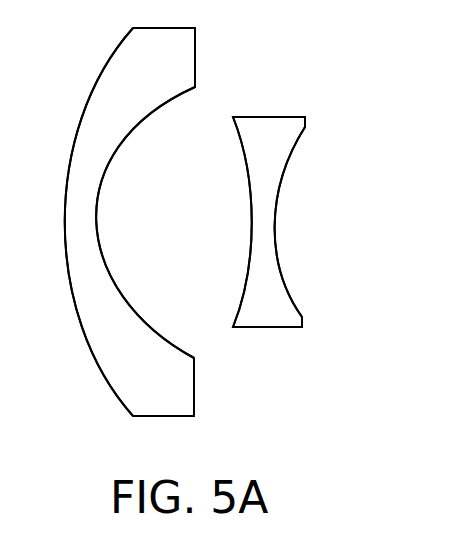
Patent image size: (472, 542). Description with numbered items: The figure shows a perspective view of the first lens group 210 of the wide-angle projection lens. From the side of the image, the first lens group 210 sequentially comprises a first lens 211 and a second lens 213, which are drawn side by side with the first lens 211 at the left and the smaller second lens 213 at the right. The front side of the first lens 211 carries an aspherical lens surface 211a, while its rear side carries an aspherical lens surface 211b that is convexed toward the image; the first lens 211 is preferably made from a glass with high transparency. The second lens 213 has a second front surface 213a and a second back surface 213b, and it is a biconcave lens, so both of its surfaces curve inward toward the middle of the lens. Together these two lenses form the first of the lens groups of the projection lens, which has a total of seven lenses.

The first lens group 210 is at (375, 442).
The first lens 211 is at (194, 387).
The aspherical lens surface 211a is at (82, 328).
The aspherical lens surface 211b is at (118, 282).
The second lens 213 is at (302, 318).
The second front surface 213a is at (240, 145).
The second back surface 213b is at (291, 281).